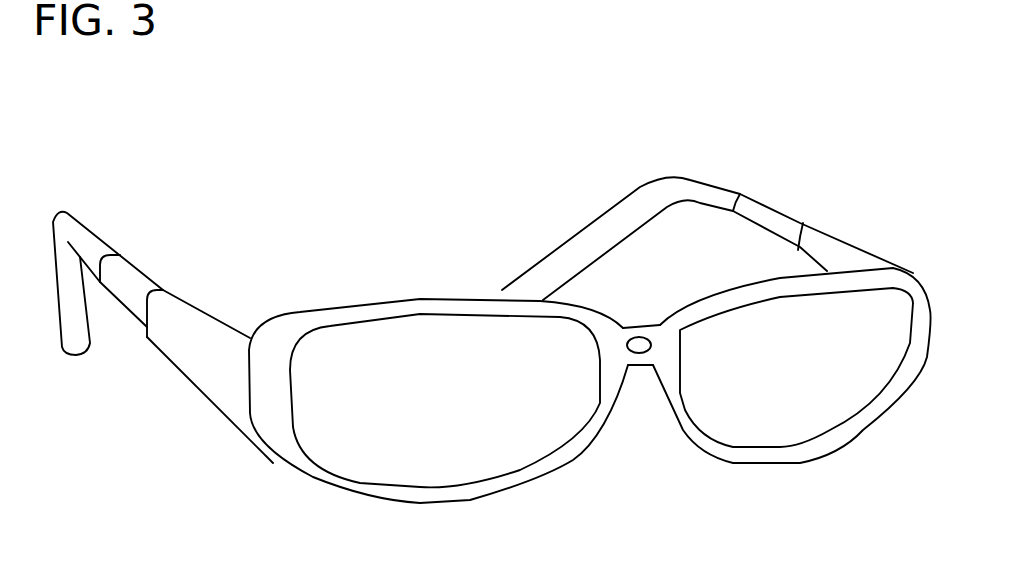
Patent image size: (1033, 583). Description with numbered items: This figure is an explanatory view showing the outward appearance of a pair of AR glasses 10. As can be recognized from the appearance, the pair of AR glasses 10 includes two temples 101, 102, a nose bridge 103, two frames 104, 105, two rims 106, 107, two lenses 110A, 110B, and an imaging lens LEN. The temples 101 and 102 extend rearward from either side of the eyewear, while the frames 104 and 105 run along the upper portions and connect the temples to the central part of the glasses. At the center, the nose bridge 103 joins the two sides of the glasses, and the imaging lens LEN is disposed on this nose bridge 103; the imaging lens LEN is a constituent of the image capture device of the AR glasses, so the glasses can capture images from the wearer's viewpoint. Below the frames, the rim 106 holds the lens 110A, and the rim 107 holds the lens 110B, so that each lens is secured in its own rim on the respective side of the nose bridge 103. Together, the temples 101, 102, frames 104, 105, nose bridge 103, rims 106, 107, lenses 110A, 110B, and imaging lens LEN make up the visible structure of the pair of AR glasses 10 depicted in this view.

The pair of AR glasses 10 is at (82, 154).
The temple 101 is at (693, 188).
The temple 102 is at (92, 243).
The nose bridge 103 is at (642, 333).
The frame 104 is at (857, 238).
The frame 105 is at (233, 373).
The rim 106 is at (810, 450).
The rim 107 is at (458, 488).
The lens 110A is at (847, 380).
The lens 110B is at (333, 433).
The imaging lens LEN is at (639, 354).